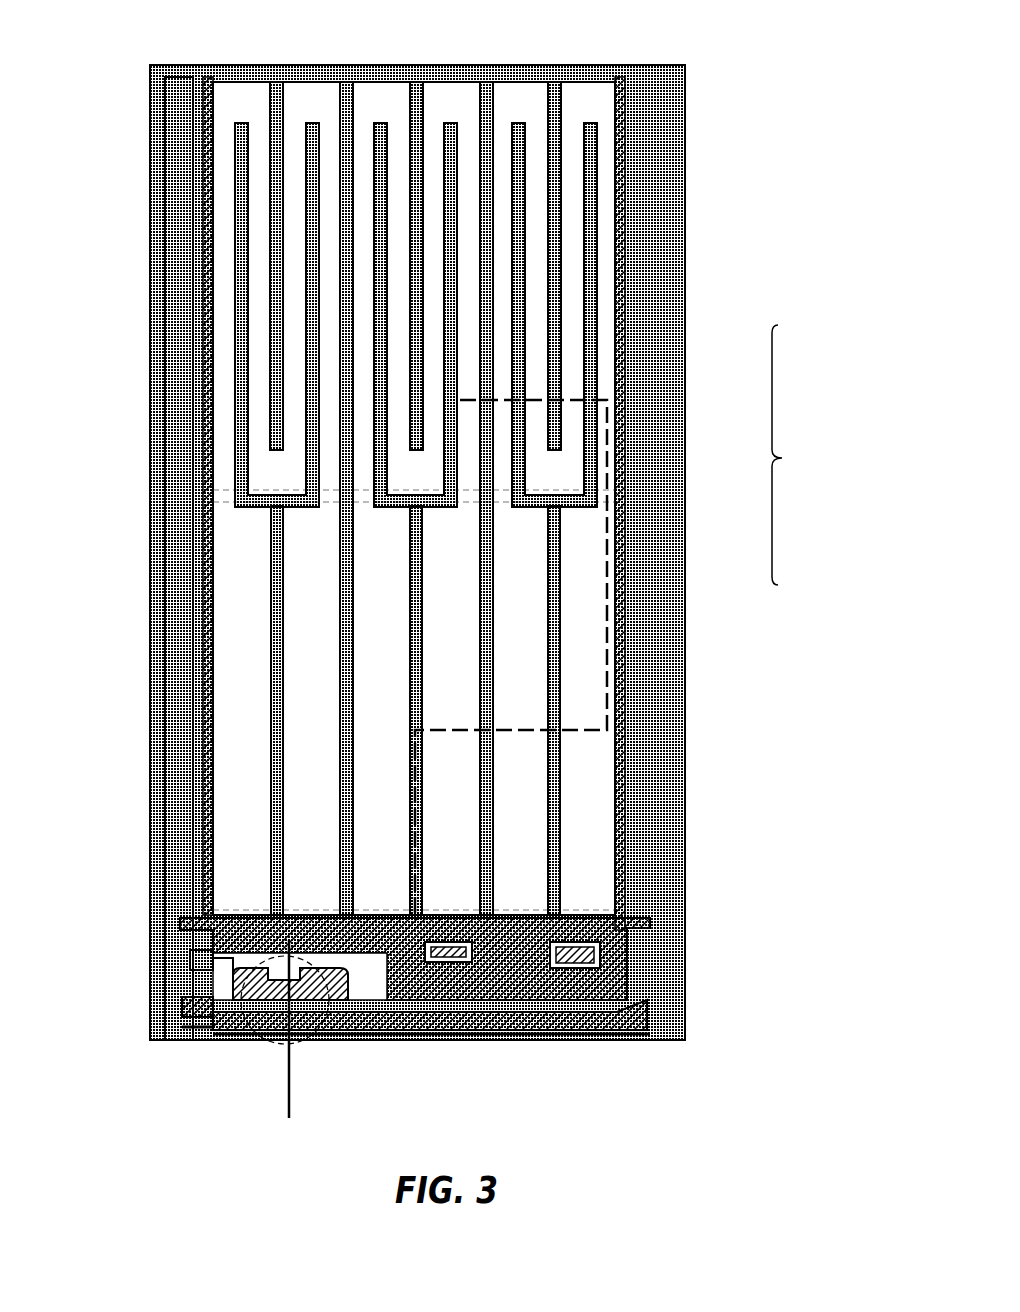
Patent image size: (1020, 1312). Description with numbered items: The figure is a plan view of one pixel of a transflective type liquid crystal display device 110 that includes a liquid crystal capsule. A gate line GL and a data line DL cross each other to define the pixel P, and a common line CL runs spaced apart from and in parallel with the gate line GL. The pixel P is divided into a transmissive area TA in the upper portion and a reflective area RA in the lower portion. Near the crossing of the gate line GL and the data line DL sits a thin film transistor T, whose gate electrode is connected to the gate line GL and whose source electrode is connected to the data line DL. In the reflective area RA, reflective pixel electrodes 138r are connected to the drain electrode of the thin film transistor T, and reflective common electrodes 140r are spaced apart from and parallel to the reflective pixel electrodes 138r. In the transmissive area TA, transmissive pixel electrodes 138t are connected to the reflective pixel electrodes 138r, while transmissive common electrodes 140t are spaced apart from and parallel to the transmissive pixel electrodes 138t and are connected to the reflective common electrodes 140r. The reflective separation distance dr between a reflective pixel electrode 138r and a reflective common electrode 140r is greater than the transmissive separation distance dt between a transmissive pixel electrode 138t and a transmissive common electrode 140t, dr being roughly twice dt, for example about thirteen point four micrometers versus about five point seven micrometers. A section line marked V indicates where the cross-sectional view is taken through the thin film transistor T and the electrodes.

The transflective type liquid crystal display device 110 is at (630, 65).
The transmissive common electrode 140t is at (553, 202).
The transmissive pixel electrode 138t is at (590, 256).
The transmissive area TA is at (626, 318).
The reflective area RA is at (626, 584).
The pixel P is at (790, 455).
The reflective pixel electrode 138r is at (560, 755).
The reflective common electrode 140r is at (485, 812).
The data line DL is at (165, 614).
The common line CL is at (178, 922).
The thin film transistor T is at (170, 960).
The gate line GL is at (175, 1006).
The section line V is at (468, 390).
The transmissive separation distance dt is at (604, 308).
The reflective separation distance dr is at (553, 670).